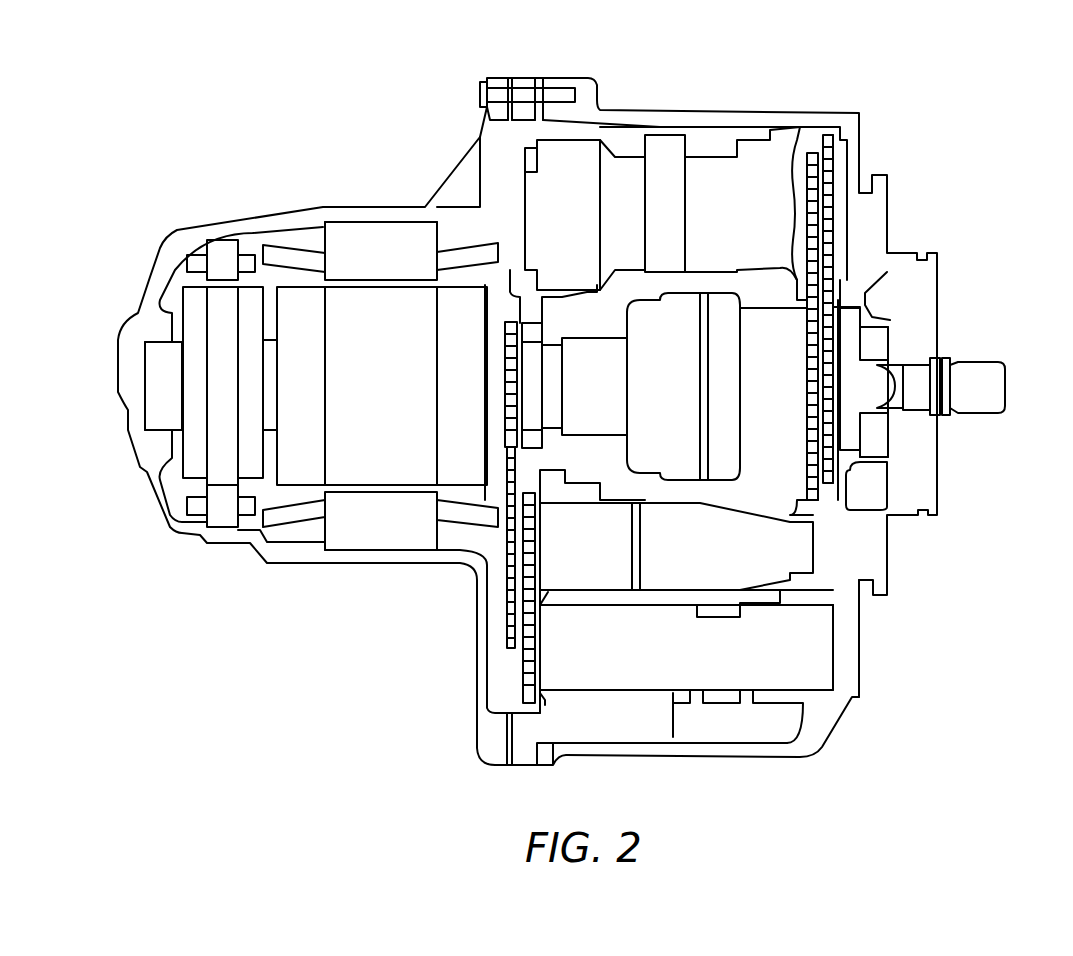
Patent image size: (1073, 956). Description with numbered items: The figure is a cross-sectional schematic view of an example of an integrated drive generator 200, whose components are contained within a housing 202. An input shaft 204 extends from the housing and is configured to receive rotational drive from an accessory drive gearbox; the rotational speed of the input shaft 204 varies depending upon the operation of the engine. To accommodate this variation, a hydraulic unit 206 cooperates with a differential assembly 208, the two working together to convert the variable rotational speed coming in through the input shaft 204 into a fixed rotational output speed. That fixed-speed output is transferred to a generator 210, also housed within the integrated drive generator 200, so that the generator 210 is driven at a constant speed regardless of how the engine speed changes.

The integrated drive generator 200 is at (980, 88).
The housing 202 is at (447, 173).
The input shaft 204 is at (984, 358).
The hydraulic unit 206 is at (707, 155).
The differential assembly 208 is at (583, 390).
The generator 210 is at (383, 530).